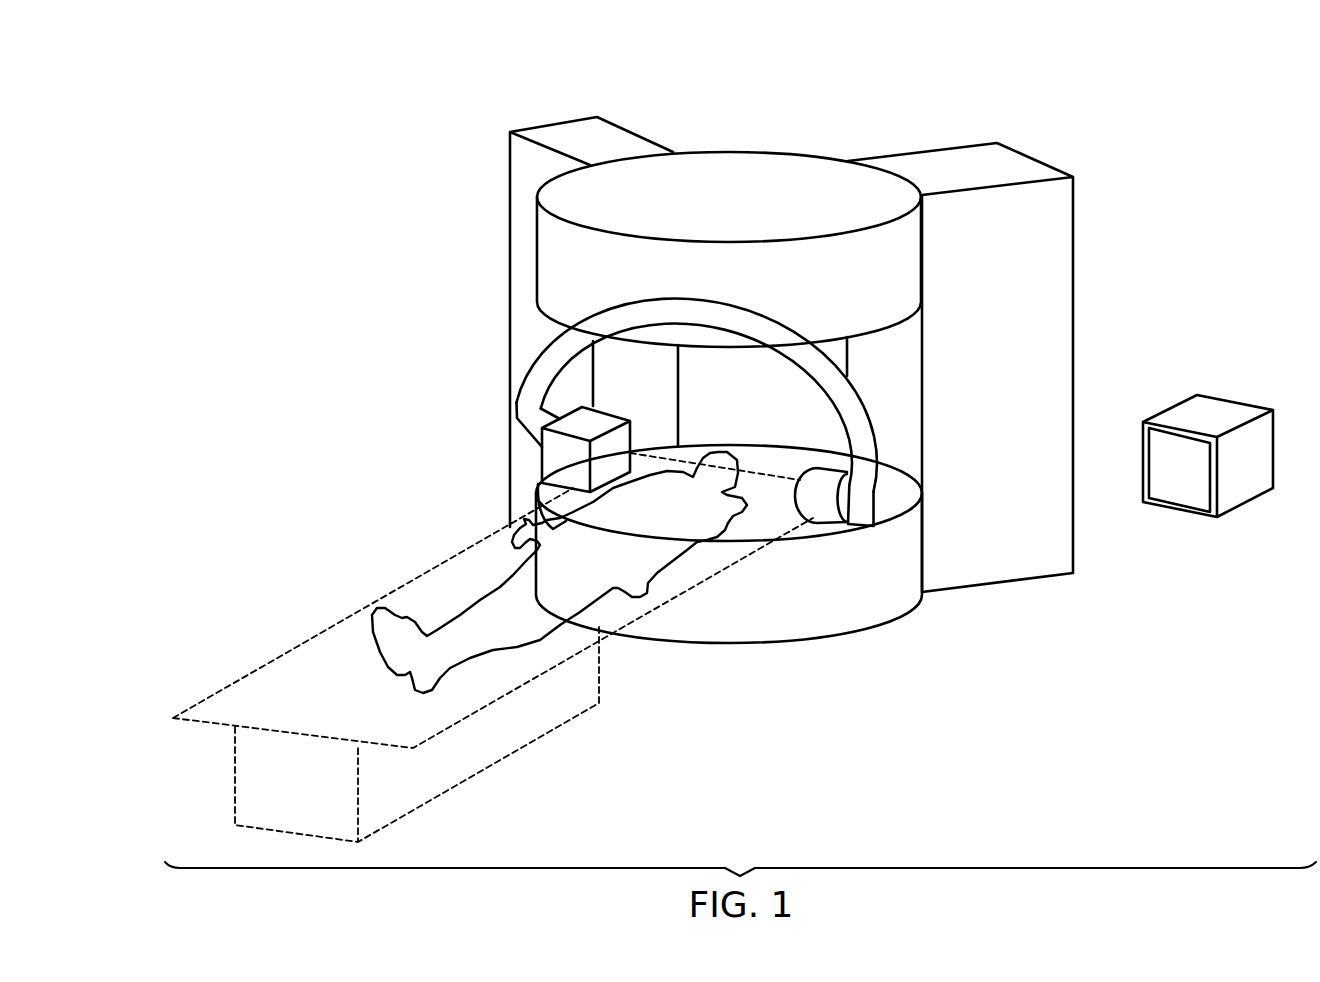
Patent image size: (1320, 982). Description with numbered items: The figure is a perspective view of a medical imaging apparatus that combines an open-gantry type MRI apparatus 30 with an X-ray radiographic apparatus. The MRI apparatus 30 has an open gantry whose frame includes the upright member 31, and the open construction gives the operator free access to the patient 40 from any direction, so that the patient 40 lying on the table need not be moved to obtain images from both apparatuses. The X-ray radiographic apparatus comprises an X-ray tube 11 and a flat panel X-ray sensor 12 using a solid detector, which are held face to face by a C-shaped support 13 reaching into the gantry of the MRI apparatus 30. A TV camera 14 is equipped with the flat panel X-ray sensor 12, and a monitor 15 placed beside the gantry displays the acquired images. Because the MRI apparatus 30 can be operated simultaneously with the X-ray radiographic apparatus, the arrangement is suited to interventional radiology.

The MRI apparatus 30 is at (535, 112).
The support plate 31 is at (508, 180).
The C-shaped support 13 is at (516, 398).
The X-ray tube 11 is at (542, 468).
The flat panel X-ray sensor 12 is at (867, 584).
The TV camera 14 is at (820, 510).
The monitor 15 is at (1230, 493).
The patient 40 is at (510, 578).